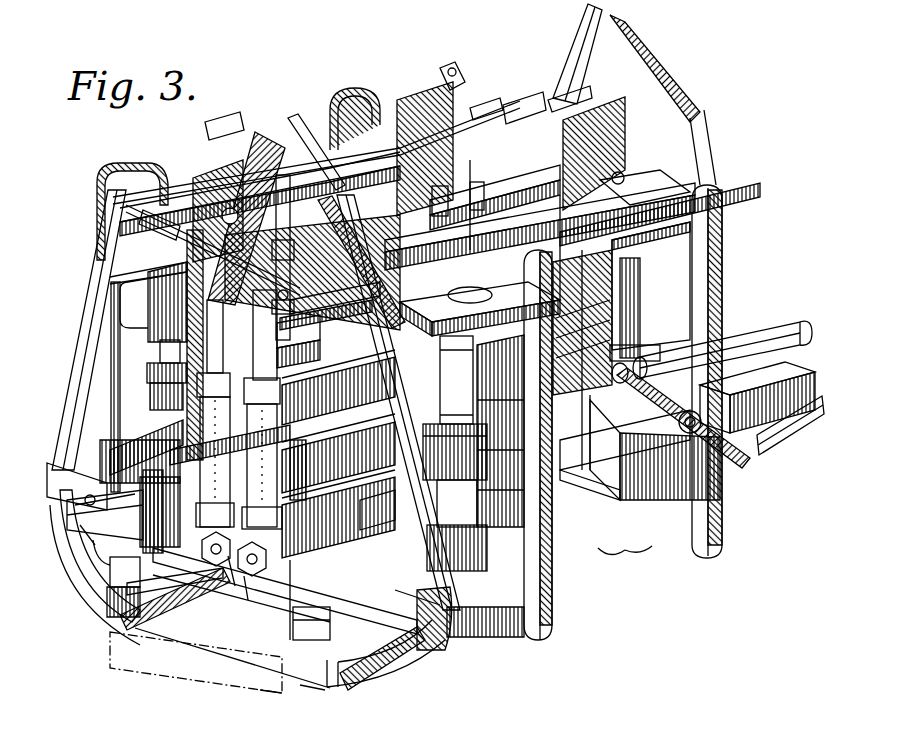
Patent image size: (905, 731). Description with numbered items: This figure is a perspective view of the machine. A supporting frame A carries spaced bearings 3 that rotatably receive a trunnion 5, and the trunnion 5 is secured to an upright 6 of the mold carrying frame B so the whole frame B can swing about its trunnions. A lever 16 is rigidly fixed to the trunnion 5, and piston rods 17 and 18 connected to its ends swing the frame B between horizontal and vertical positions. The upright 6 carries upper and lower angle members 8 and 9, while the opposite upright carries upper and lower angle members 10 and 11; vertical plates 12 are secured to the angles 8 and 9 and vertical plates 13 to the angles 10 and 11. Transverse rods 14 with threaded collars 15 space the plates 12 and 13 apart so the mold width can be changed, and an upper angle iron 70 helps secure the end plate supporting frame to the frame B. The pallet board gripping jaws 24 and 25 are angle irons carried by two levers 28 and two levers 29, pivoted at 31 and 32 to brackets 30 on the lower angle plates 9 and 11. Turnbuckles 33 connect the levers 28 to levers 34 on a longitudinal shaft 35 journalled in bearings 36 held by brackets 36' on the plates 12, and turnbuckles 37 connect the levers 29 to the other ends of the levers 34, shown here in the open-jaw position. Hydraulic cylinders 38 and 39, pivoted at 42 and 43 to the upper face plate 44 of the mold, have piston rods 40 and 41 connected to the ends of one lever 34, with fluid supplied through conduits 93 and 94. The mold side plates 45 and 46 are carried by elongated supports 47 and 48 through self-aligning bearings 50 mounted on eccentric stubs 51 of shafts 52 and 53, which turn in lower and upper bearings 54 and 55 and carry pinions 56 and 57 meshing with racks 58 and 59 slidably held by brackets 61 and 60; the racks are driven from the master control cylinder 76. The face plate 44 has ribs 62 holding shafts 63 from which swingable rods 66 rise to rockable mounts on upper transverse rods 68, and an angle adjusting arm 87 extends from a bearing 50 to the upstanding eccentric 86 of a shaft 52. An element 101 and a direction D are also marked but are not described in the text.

The upper angle member 10 is at (112, 258).
The angle adjusting arm 87 is at (103, 362).
The piston rod 40 is at (190, 270).
The vertical plates 13 is at (212, 175).
The longitudinally-extending shaft 35 is at (470, 130).
The bearings 36 is at (371, 161).
The brackets 36' is at (580, 88).
The turnbuckles 33 is at (484, 104).
The levers 34 is at (260, 145).
The turnbuckles 37 is at (648, 52).
The levers 28 is at (462, 68).
The eccentric upstanding portion 86 is at (356, 100).
The vertical plates 12 is at (380, 178).
The upper angle iron 70 is at (510, 196).
The beam 101 is at (600, 242).
The mold carrying frame B is at (632, 165).
The upper angle member 8 is at (728, 190).
The levers 29 is at (712, 150).
The upright 6 is at (572, 540).
The lower angle member 9 is at (425, 640).
The pivot 32 is at (440, 622).
The pivot 31 is at (58, 462).
The rack 58 is at (110, 460).
The shafts 52 is at (160, 350).
The pinions 56 is at (152, 400).
The brackets 61 is at (150, 372).
The piston rod 41 is at (292, 230).
The threaded collars 15 is at (305, 294).
The transverse rods 14 is at (318, 314).
The swingable and adjustable rods 66 is at (330, 334).
The upper transverse rods 68 is at (330, 372).
The upper bearings 55 is at (446, 330).
The master control cylinder 76 is at (505, 305).
The shafts 53 is at (470, 510).
The lower bearings 54 is at (488, 550).
The pinions 57 is at (648, 350).
The conduit 93 is at (596, 306).
The conduit 94 is at (582, 370).
The trunnion 5 is at (590, 400).
The spaced bearings 3 is at (590, 430).
The piston rod 18 is at (790, 322).
The supporting frame A is at (785, 372).
The piston rod 17 is at (798, 445).
The lever 16 is at (680, 410).
The self-aligning bearings 50 is at (606, 556).
The eccentric stub 51 is at (632, 556).
The transversely extending shafts 63 is at (148, 506).
The lower angle member 11 is at (95, 552).
The brackets 30 is at (82, 530).
The elongated support 47 is at (118, 590).
The pallet board gripping jaw 24 is at (120, 615).
The mold side plate 45 is at (150, 618).
The direction D is at (210, 672).
The mold side plate 46 is at (261, 696).
The elongated support 48 is at (296, 690).
The pallet board gripping jaw 25 is at (318, 690).
The pivot 42 is at (170, 600).
The hydraulic cylinder 38 is at (216, 566).
The upper face plate 44 is at (232, 588).
The hydraulic cylinder 39 is at (255, 578).
The pivot 43 is at (246, 600).
The rack 59 is at (290, 600).
The brackets 60 is at (398, 456).
The elongated ribs 62 is at (400, 498).